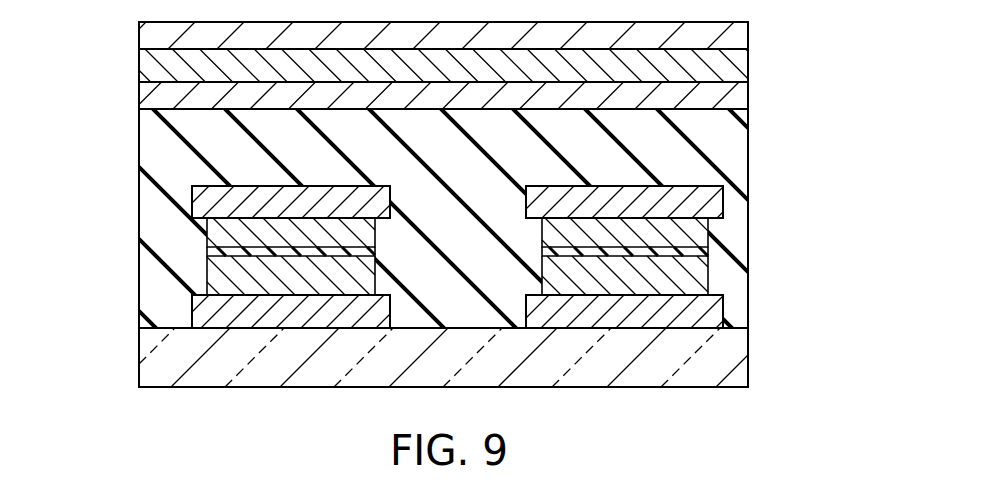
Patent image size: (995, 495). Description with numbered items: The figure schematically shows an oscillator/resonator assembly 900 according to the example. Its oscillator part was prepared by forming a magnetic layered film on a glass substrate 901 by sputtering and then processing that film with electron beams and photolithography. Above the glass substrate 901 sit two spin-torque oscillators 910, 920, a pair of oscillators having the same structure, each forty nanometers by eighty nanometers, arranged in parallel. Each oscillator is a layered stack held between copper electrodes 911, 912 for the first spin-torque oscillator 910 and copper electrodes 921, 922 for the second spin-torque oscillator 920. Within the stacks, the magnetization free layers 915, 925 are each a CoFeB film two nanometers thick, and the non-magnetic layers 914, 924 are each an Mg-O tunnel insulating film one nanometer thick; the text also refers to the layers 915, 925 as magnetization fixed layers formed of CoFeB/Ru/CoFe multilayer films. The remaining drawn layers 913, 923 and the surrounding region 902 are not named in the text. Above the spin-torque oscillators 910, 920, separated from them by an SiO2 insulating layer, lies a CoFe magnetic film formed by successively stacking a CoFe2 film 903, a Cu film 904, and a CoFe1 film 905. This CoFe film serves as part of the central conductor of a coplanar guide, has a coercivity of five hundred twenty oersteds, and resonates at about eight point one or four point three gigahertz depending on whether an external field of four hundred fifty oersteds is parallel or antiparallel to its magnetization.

The oscillator/resonator assembly 900 is at (123, 69).
The glass substrate 901 is at (747, 358).
The sealing resin layer 902 is at (745, 128).
The CoFe2 film 903 is at (742, 92).
The Cu film 904 is at (742, 63).
The CoFe1 film 905 is at (742, 38).
The spin-torque oscillator 910 is at (90, 187).
The electrode 911 is at (192, 203).
The electrode 912 is at (193, 315).
The electron transport layer of first element 913 is at (208, 232).
The non-magnetic layer 914 is at (207, 254).
The magnetization free layer 915 is at (207, 288).
The spin-torque oscillator 920 is at (810, 187).
The electrode 921 is at (715, 200).
The electrode 922 is at (715, 312).
The electron transport layer of second element 923 is at (705, 230).
The non-magnetic layer 924 is at (705, 253).
The magnetization free layer 925 is at (705, 281).